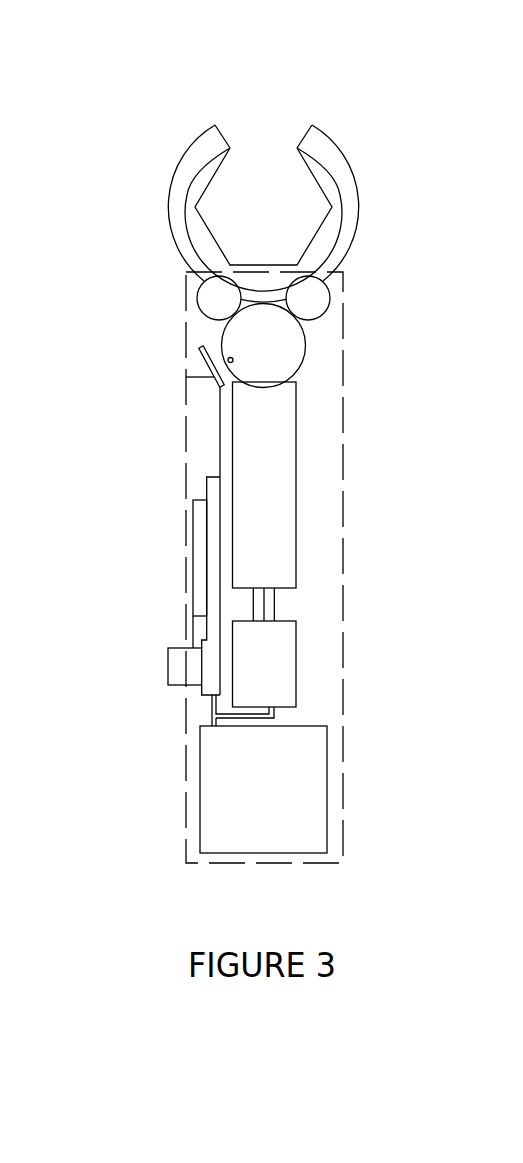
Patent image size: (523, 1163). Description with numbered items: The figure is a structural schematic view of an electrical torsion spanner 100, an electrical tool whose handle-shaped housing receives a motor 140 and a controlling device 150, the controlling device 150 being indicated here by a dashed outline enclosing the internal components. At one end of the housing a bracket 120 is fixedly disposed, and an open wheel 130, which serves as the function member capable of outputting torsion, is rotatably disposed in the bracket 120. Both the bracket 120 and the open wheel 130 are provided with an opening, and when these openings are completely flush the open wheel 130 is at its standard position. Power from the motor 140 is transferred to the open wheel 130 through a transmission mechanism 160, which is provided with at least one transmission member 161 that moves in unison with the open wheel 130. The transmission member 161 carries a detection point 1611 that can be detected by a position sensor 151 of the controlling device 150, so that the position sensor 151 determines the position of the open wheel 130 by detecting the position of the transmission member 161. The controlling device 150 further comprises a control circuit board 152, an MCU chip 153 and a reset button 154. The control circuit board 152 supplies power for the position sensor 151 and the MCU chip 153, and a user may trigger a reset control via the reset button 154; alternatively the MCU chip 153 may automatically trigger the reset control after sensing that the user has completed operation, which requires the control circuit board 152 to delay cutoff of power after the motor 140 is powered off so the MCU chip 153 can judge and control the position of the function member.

The electrical torsion spanner 100 is at (161, 95).
The bracket 120 is at (178, 213).
The open wheel 130 is at (327, 186).
The motor 140 is at (277, 798).
The controlling device 150 is at (178, 473).
The position sensor 151 is at (205, 366).
The control circuit board 152 is at (215, 630).
The MCU chip 153 is at (202, 562).
The reset button 154 is at (178, 673).
The transmission mechanism 160 is at (308, 500).
The transmission member 161 is at (285, 360).
The detection point 1611 is at (233, 359).